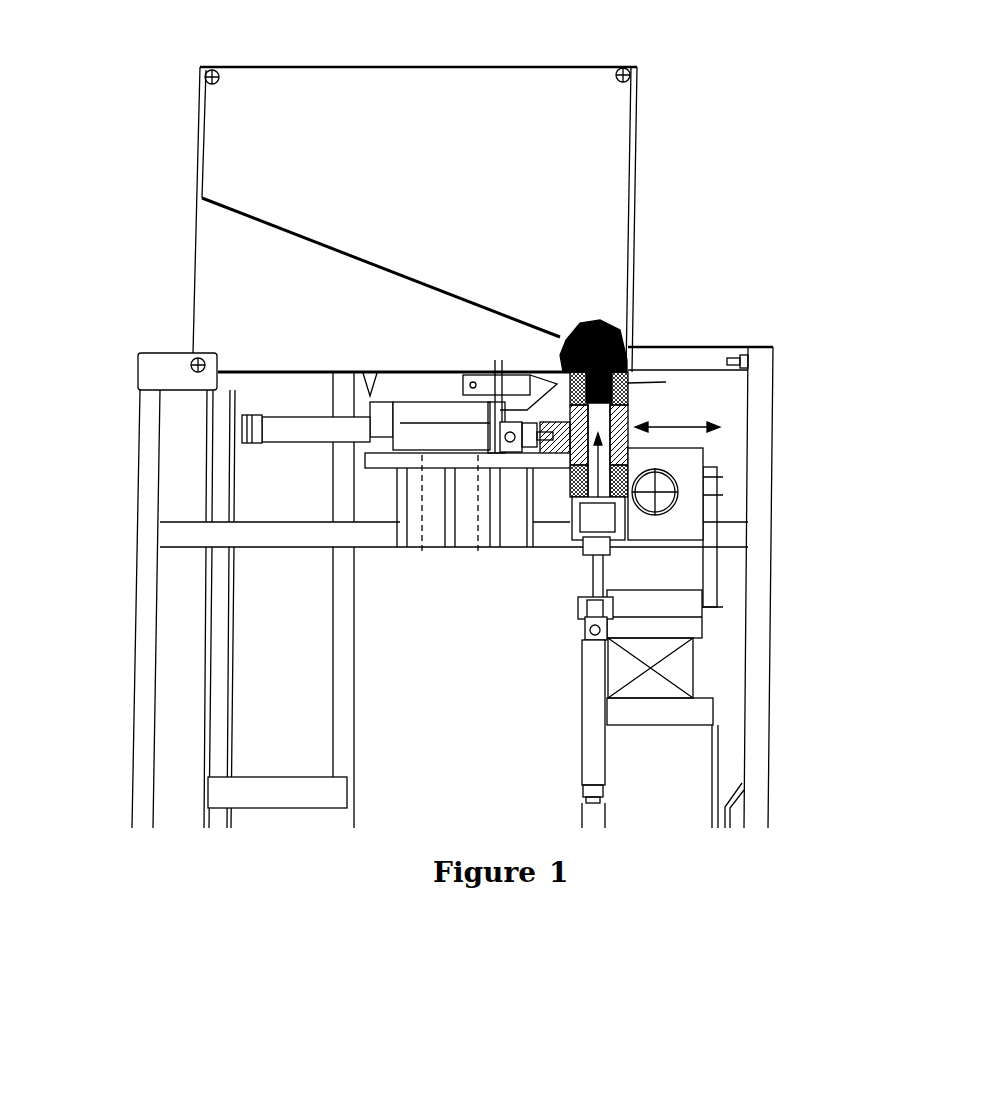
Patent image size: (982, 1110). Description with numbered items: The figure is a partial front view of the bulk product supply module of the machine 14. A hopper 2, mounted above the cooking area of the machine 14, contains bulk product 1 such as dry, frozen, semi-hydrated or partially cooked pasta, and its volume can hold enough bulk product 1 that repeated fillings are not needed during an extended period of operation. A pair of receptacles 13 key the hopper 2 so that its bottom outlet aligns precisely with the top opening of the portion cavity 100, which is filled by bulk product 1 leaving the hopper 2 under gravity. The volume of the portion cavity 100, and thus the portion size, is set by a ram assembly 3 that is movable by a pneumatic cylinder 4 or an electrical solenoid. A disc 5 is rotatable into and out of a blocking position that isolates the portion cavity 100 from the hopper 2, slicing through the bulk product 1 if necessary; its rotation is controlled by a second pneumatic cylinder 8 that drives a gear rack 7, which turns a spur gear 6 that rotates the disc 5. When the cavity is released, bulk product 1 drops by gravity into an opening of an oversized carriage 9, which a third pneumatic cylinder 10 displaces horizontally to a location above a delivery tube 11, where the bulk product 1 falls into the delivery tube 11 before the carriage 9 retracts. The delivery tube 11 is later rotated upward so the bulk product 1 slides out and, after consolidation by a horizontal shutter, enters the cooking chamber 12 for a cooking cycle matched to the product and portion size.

The bulk product 1 is at (597, 320).
The hopper 2 is at (633, 263).
The ram assembly 3 is at (580, 532).
The pneumatic cylinder 4 is at (582, 687).
The disc 5 is at (347, 373).
The spur gear 6 is at (558, 373).
The gear rack 7 is at (423, 402).
The second pneumatic cylinder 8 is at (315, 442).
The carriage 9 is at (628, 417).
The third pneumatic cylinder 10 is at (448, 468).
The delivery tube 11 is at (678, 501).
The cooking chamber 12 is at (717, 747).
The receptacles 13 is at (147, 390).
The machine 14 is at (710, 347).
The portion cavity 100 is at (664, 385).